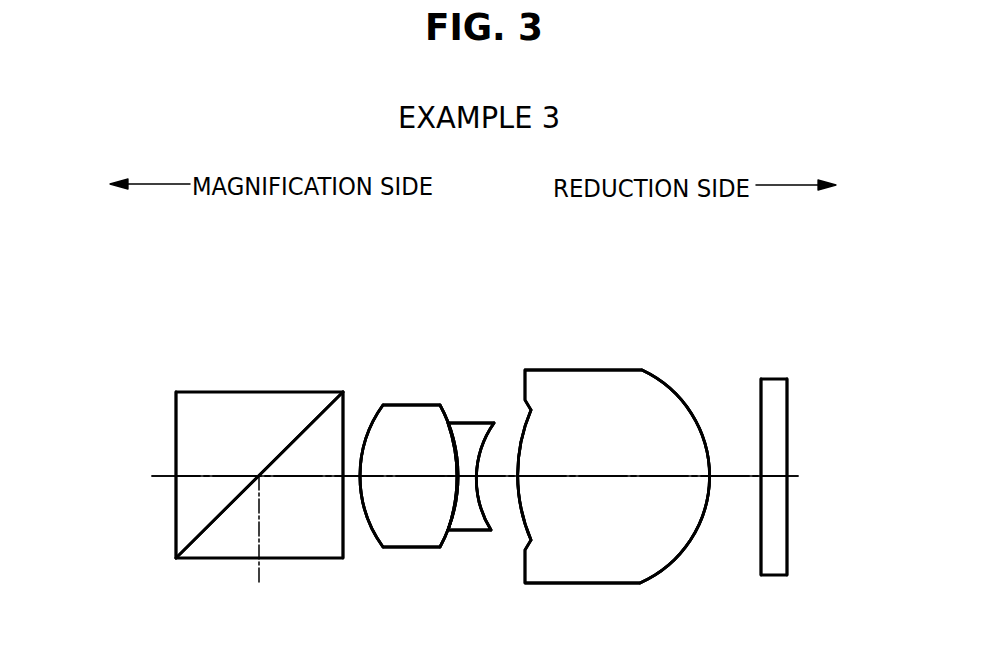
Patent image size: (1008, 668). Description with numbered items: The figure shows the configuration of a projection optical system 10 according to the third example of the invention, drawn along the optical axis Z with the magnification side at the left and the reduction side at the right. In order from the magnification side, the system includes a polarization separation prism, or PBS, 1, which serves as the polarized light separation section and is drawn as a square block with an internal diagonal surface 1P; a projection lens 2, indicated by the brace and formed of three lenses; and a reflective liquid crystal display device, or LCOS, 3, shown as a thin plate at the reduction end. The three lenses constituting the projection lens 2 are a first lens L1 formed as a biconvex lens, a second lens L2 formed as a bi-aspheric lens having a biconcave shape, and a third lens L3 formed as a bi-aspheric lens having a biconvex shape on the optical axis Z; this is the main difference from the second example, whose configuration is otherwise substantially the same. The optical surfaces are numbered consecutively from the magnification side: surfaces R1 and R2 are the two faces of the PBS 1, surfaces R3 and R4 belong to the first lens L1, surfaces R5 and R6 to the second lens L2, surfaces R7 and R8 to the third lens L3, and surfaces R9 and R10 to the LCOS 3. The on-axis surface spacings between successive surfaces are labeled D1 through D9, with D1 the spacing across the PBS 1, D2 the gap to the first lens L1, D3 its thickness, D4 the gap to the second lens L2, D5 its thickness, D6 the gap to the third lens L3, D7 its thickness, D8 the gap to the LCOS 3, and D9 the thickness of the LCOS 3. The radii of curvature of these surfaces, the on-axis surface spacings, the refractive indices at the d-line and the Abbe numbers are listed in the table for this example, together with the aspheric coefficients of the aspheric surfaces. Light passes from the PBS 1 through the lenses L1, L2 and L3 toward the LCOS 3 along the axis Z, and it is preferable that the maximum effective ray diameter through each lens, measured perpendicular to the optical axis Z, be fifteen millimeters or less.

The projection optical system 10 is at (198, 282).
The polarization separation prism 1 is at (236, 398).
The prism reflecting surface 1P is at (290, 438).
The projection lens 2 is at (735, 272).
The reflective liquid crystal display device 3 is at (771, 379).
The first lens L1 is at (412, 410).
The second lens L2 is at (488, 424).
The third lens L3 is at (598, 378).
The optical axis Z is at (507, 478).
The prism entrance surface R1 is at (178, 413).
The prism exit surface R2 is at (343, 393).
The first lens magnification-side surface R3 is at (364, 428).
The first lens reduction-side surface R4 is at (451, 414).
The second lens magnification-side surface R5 is at (456, 445).
The second lens reduction-side surface R6 is at (481, 472).
The third lens magnification-side surface R7 is at (537, 470).
The third lens reduction-side surface R8 is at (708, 472).
The plate magnification-side surface R9 is at (760, 407).
The plate reduction-side surface R10 is at (789, 407).
The prism thickness D1 is at (190, 487).
The spacing between prism and first lens D2 is at (352, 478).
The first lens thickness D3 is at (402, 482).
The spacing between first and second lens D4 is at (447, 482).
The second lens thickness D5 is at (469, 478).
The spacing between second and third lens D6 is at (534, 489).
The third lens thickness D7 is at (660, 480).
The spacing between third lens and plate D8 is at (746, 485).
The plate thickness D9 is at (775, 486).